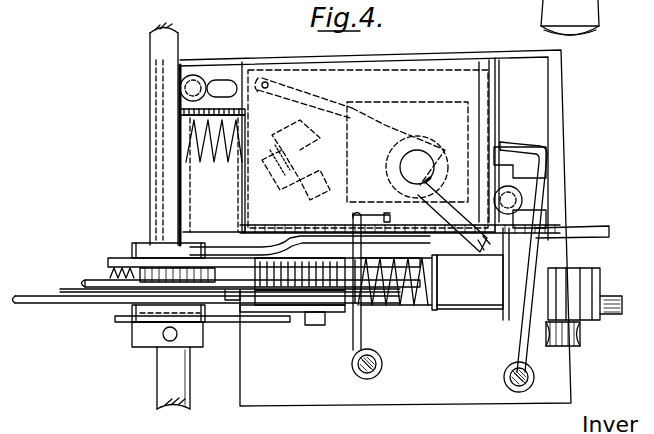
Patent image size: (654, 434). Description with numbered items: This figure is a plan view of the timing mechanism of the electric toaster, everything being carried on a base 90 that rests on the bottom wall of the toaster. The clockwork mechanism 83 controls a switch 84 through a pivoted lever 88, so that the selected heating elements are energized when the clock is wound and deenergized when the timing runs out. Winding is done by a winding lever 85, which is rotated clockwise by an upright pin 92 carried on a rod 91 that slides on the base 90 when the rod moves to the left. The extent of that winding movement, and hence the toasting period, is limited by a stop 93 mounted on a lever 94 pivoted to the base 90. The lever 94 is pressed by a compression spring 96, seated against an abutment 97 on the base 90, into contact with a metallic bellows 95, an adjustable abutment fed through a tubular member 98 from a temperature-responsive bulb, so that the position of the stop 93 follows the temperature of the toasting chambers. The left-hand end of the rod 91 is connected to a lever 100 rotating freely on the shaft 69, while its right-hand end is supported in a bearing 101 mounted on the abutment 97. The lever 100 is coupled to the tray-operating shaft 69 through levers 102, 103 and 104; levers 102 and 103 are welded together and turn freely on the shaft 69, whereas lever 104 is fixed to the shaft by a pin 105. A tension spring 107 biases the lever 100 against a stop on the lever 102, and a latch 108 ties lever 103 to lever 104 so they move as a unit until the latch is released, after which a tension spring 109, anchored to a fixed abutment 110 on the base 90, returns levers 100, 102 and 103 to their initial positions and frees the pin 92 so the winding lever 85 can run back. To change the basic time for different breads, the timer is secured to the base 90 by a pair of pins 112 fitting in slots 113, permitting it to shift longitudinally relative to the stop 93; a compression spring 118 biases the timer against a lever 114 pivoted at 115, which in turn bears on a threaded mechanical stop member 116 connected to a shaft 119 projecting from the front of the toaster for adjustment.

The shaft 69 is at (150, 92).
The clockwork mechanism 83 is at (430, 100).
The switch 84 is at (268, 140).
The winding lever 85 is at (470, 245).
The pivoted lever 88 is at (355, 98).
The base 90 is at (282, 406).
The rod 91 is at (596, 229).
The upright pin 92 is at (503, 270).
The stop 93 is at (383, 213).
The lever 94 is at (355, 350).
The metallic bellows 95 is at (353, 270).
The compression spring 96 is at (410, 310).
The abutment 97 is at (433, 312).
The tubular member 98 is at (62, 303).
The lever 100 is at (118, 258).
The bearing 101 is at (507, 256).
The lever 102 is at (85, 281).
The lever 103 is at (292, 278).
The lever 104 is at (292, 318).
The pin 105 is at (165, 338).
The tension spring 107 is at (110, 272).
The latch 108 is at (380, 278).
The tension spring 109 is at (243, 266).
The fixed abutment 110 is at (250, 318).
The pins 112 is at (197, 75).
The slots 113 is at (222, 80).
The lever 114 is at (520, 142).
The pivot 115 is at (505, 381).
The mechanical stop member 116 is at (542, 330).
The compression spring 118 is at (210, 170).
The shaft 119 is at (614, 316).